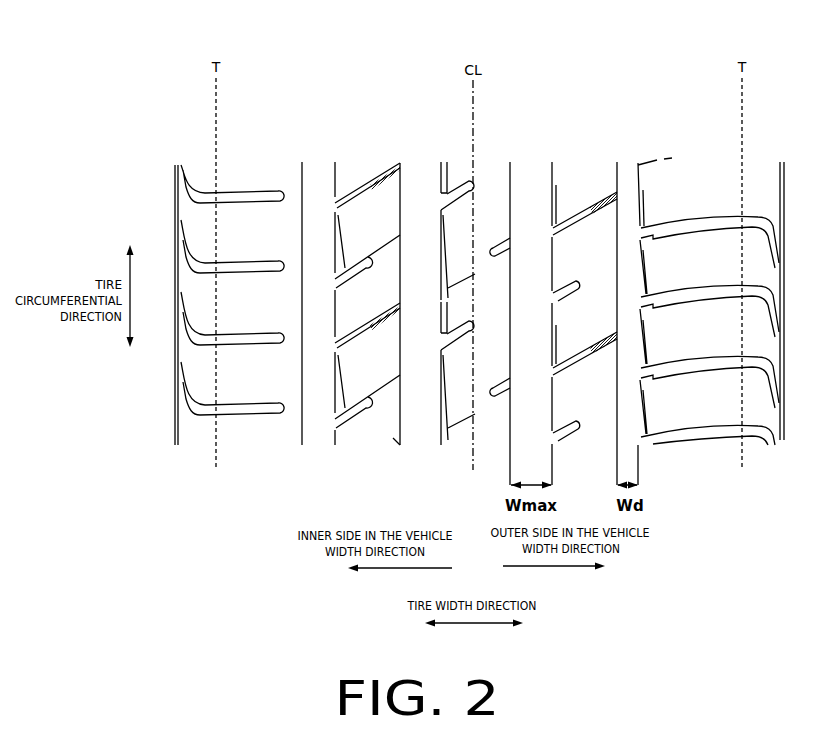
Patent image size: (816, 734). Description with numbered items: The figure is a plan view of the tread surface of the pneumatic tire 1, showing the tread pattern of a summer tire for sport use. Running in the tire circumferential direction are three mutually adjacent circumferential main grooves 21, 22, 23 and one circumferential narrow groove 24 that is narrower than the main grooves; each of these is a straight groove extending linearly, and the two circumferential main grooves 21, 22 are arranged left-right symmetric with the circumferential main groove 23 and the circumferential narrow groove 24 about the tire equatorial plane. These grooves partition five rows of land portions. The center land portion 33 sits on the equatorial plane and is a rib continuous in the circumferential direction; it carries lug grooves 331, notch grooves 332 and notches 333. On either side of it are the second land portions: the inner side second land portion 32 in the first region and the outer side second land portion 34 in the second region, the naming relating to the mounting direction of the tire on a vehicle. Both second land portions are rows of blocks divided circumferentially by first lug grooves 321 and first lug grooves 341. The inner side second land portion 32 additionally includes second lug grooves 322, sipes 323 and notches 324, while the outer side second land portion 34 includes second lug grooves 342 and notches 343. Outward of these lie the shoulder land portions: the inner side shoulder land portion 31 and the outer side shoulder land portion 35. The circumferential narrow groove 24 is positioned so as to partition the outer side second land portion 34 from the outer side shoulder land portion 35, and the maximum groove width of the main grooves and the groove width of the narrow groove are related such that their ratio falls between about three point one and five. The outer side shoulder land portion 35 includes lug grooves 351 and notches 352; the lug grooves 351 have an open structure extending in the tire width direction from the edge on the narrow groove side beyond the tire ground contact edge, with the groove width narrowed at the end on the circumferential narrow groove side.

The pneumatic tire 1 is at (647, 58).
The circumferential main groove 21 is at (313, 166).
The circumferential main groove 22 is at (422, 164).
The circumferential main groove 23 is at (528, 160).
The circumferential narrow groove 24 is at (627, 160).
The inner side shoulder land portion 31 is at (233, 156).
The inner side second land portion 32 is at (361, 155).
The center land portion 33 is at (487, 160).
The outer side second land portion 34 is at (583, 155).
The outer side shoulder land portion 35 is at (701, 155).
The first lug groove 321 is at (373, 190).
The second lug groove 322 is at (354, 272).
The sipe 323 is at (380, 248).
The notch 324 is at (344, 248).
The lug groove 331 is at (471, 186).
The notch groove 332 is at (505, 240).
The notch 333 is at (475, 274).
The first lug groove 341 is at (584, 217).
The second lug groove 342 is at (583, 296).
The notch 343 is at (557, 197).
The lug groove 351 is at (712, 217).
The notch 352 is at (645, 202).